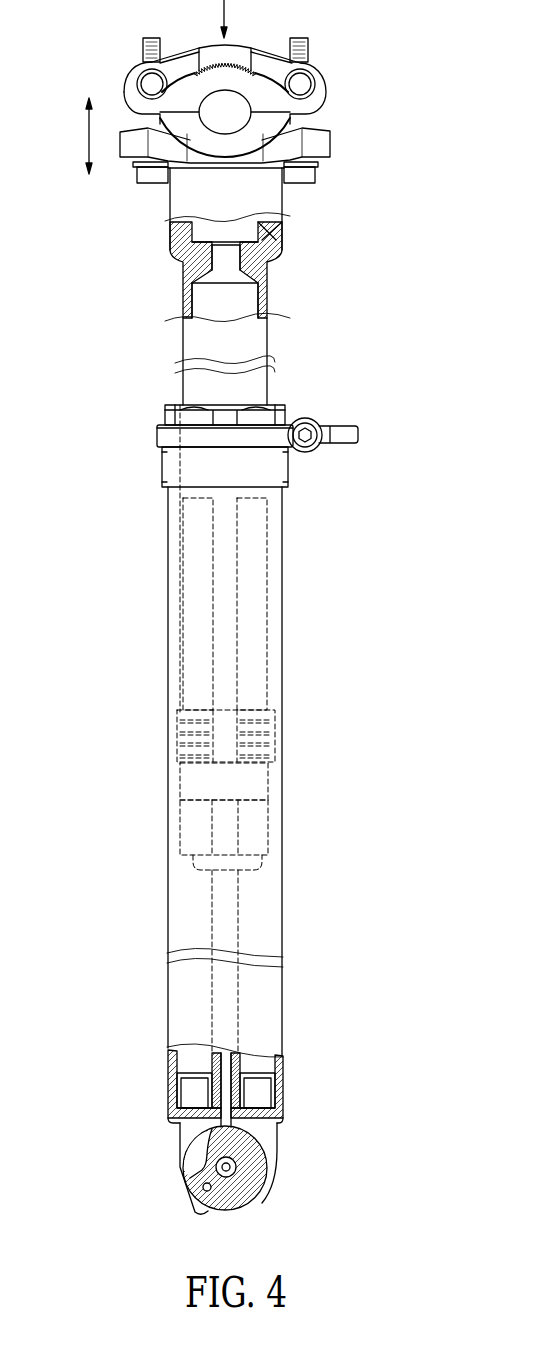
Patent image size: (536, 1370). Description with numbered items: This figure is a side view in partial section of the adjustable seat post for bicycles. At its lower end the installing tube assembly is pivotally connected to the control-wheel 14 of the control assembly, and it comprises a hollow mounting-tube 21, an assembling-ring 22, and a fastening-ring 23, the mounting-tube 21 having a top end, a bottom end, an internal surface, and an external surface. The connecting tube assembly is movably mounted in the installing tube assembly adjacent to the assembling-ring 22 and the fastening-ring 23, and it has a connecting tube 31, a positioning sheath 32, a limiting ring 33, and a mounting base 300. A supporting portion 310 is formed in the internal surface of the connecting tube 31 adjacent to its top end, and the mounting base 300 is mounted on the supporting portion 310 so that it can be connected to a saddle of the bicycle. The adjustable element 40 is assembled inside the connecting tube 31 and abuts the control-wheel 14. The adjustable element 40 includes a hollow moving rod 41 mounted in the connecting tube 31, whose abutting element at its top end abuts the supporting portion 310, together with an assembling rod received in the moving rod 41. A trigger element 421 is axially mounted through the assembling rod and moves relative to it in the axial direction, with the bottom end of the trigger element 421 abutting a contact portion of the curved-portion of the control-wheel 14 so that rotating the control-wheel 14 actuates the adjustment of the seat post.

The mounting base 300 is at (273, 70).
The supporting portion 310 is at (245, 258).
The moving rod 41 is at (242, 303).
The fastening-ring 23 is at (343, 435).
The assembling-ring 22 is at (277, 468).
The mounting-tube 21 is at (168, 594).
The positioning sheath 32 is at (223, 720).
The limiting ring 33 is at (260, 775).
The connecting tube 31 is at (260, 827).
The adjustable element 40 is at (228, 915).
The trigger element 421 is at (225, 1112).
The control-wheel 14 is at (255, 1157).